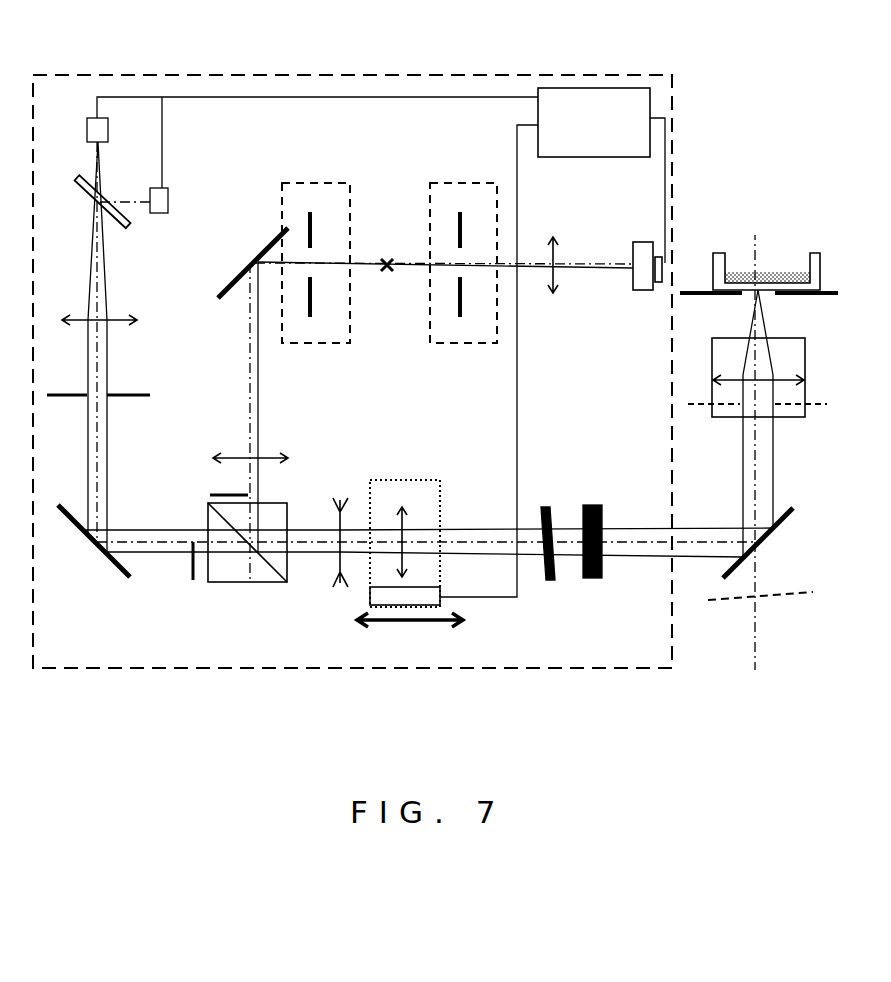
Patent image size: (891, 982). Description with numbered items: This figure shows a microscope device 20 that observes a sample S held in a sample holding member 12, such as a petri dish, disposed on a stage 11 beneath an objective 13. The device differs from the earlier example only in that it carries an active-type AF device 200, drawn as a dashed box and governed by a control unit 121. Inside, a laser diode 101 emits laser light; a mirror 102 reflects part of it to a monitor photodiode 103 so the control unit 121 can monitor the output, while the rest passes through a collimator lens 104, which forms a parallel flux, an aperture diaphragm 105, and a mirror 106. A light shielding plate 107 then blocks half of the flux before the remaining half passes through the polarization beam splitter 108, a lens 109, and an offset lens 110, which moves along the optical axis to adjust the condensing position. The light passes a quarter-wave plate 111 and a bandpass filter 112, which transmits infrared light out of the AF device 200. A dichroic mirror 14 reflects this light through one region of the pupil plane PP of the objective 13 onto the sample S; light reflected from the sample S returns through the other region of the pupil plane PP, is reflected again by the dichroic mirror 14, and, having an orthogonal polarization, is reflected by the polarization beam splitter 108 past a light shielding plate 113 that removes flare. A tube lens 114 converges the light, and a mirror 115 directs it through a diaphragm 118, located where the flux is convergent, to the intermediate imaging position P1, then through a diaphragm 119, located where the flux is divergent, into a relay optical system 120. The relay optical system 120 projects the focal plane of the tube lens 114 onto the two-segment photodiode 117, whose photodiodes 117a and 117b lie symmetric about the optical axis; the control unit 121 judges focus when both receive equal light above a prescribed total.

The microscope device 20 is at (710, 46).
The AF device 200 is at (503, 73).
The control unit 121 is at (599, 88).
The laser diode 101 is at (108, 135).
The mirror 102 is at (86, 192).
The monitor photodiode 103 is at (168, 198).
The collimator lens 104 is at (118, 320).
The aperture diaphragm 105 is at (128, 399).
The mirror 106 is at (115, 565).
The light shielding plate 107 is at (190, 565).
The polarization beam splitter 108 is at (247, 583).
The lens 109 is at (333, 518).
The offset lens 110 is at (398, 518).
The quarter-wave plate 111 is at (545, 505).
The bandpass filter 112 is at (593, 505).
The light shielding plate 113 is at (222, 490).
The tube lens 114 is at (270, 455).
The mirror 115 is at (225, 290).
The diaphragm 118 is at (305, 222).
The diaphragm 119 is at (462, 222).
The intermediate imaging position P1 is at (389, 272).
The relay optical system 120 is at (553, 237).
The two-segment photodiode 117 is at (741, 219).
The photodiode 117a is at (650, 252).
The photodiode 117b is at (652, 278).
The sample S is at (799, 264).
The sample holding member 12 is at (822, 264).
The stage 11 is at (818, 295).
The objective 13 is at (806, 358).
The pupil plane PP is at (818, 405).
The dichroic mirror 14 is at (783, 525).